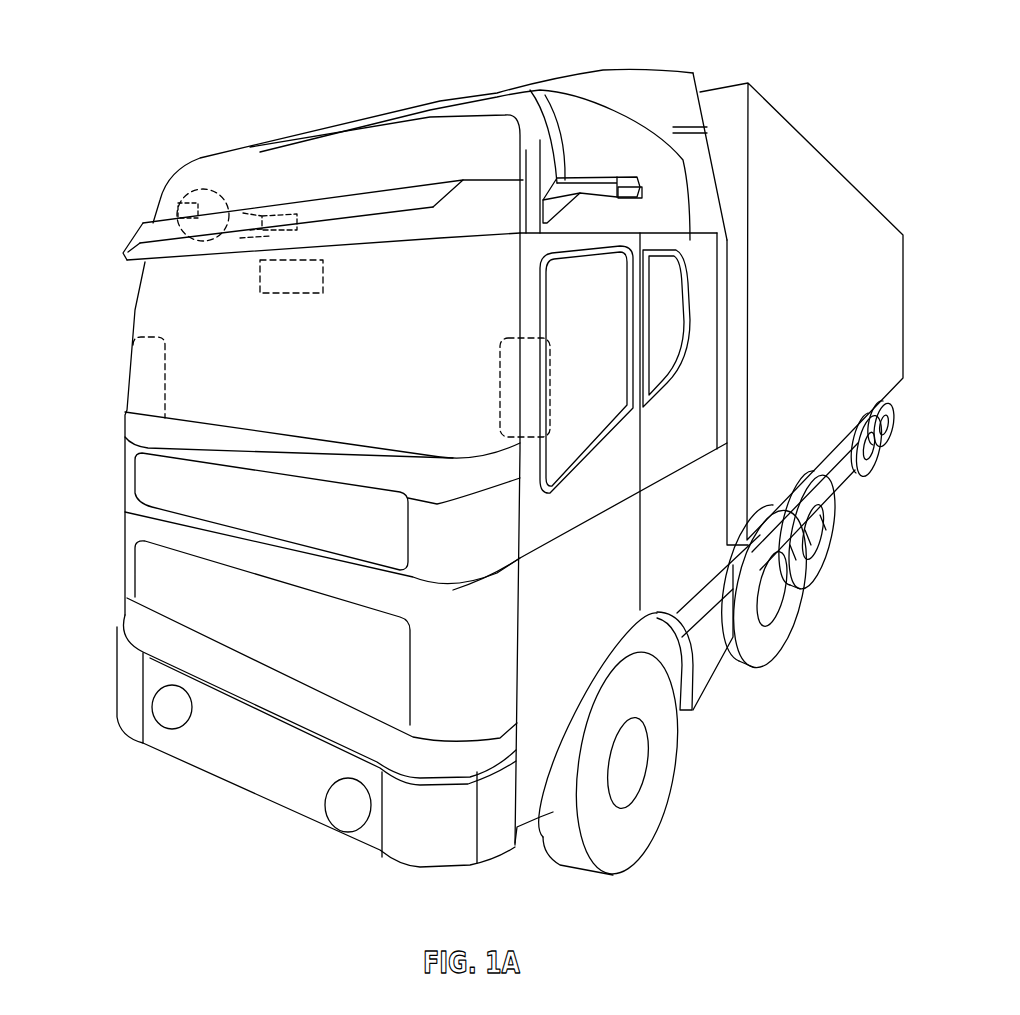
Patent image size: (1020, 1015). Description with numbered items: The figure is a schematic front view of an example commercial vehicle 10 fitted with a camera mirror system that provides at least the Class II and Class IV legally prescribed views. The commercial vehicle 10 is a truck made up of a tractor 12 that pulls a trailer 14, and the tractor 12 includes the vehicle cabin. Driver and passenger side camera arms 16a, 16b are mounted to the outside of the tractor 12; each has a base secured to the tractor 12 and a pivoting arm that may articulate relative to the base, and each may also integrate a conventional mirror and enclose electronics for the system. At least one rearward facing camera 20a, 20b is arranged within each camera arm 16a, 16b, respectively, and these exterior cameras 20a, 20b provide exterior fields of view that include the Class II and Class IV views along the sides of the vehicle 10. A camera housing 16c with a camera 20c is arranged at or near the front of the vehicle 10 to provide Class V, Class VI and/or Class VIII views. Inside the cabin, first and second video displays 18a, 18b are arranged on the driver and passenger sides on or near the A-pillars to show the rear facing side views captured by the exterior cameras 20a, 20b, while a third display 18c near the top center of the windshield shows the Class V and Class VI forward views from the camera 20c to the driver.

The commercial vehicle 10 is at (803, 47).
The tractor 12 is at (108, 480).
The trailer 14 is at (893, 245).
The driver side camera arm 16a is at (573, 190).
The passenger side camera arm 16b is at (203, 192).
The camera housing 16c is at (247, 207).
The first video display 18a is at (503, 393).
The second video display 18b is at (170, 373).
The third display 18c is at (323, 277).
The rearward facing camera 20a is at (645, 190).
The rearward facing camera 20b is at (177, 193).
The camera 20c is at (270, 231).